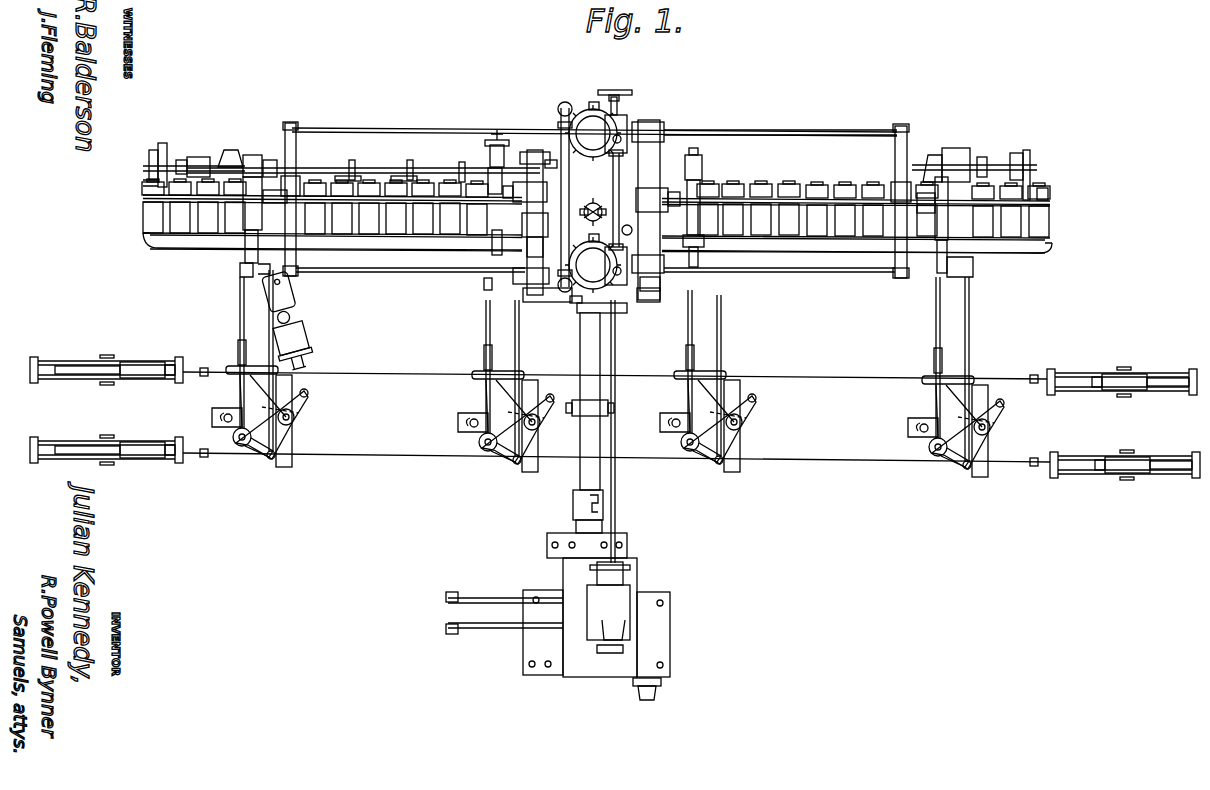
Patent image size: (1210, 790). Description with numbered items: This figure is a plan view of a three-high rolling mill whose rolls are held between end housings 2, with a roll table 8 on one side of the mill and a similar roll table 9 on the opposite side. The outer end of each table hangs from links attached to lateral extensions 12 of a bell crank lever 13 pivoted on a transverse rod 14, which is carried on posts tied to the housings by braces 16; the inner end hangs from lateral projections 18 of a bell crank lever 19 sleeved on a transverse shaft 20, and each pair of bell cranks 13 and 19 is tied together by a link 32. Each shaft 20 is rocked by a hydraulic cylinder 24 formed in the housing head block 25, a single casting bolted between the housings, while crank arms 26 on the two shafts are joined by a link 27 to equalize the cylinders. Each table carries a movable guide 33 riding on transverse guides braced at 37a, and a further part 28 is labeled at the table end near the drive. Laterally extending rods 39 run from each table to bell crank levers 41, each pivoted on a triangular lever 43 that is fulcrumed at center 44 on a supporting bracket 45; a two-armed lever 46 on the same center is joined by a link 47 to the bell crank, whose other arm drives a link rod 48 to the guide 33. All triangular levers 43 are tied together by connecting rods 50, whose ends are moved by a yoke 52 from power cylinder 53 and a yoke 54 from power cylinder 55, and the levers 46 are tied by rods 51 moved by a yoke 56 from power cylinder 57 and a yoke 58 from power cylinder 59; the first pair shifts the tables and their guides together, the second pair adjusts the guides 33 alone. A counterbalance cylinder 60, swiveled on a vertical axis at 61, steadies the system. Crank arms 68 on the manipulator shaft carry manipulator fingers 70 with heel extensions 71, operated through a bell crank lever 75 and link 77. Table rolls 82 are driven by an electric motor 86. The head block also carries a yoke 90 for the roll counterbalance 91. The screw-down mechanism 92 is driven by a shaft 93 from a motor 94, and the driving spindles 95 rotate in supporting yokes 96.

The end housings 2 is at (640, 132).
The roll table 8 is at (443, 240).
The roll table 9 is at (776, 240).
The lateral extensions 12 is at (940, 230).
The bell crank lever 13 is at (600, 202).
The transverse rod or shaft 14 is at (900, 172).
The braces 16 is at (810, 262).
The lateral projections 18 is at (708, 178).
The bell crank lever 19 is at (591, 197).
The transverse shaft 20 is at (727, 283).
The hydraulic cylinder 24 is at (570, 180).
The housing head block 25 is at (580, 197).
The crank arm 26 is at (648, 302).
The link 27 is at (578, 310).
The bearing 28 is at (492, 240).
The link 32 is at (800, 208).
The guide 33 is at (845, 256).
The brace 37a is at (984, 280).
The laterally extending rods 39 is at (936, 341).
The bell crank lever 41 is at (500, 452).
The triangular lever 43 is at (542, 374).
The fulcrum center 44 is at (536, 425).
The supporting bracket 45 is at (908, 423).
The two-armed lever 46 is at (540, 420).
The link 47 is at (552, 398).
The link rod 48 is at (969, 341).
The connecting rods 50 is at (836, 377).
The rods 51 is at (848, 463).
The yoke 52 is at (1078, 372).
The power cylinder 53 is at (1135, 380).
The yoke 54 is at (86, 358).
The power cylinder 55 is at (130, 366).
The yoke 56 is at (1084, 474).
The power cylinder 57 is at (1142, 468).
The yoke 58 is at (170, 462).
The power cylinder 59 is at (134, 452).
The counterbalance cylinder 60 is at (300, 336).
The swivel 61 is at (290, 318).
The crank arms 68 is at (424, 170).
The manipulator finger 70 is at (458, 172).
The extension 71 is at (371, 164).
The bell crank lever 75 is at (490, 152).
The link 77 is at (528, 164).
The table roll 82 is at (875, 212).
The electric motor 86 is at (965, 157).
The yoke 90 is at (598, 205).
The roll counterbalance 91 is at (587, 221).
The screw-down mechanism 92 is at (600, 115).
The shaft 93 is at (608, 403).
The motor 94 is at (615, 598).
The driving spindles 95 is at (582, 470).
The yoke 96 is at (612, 416).